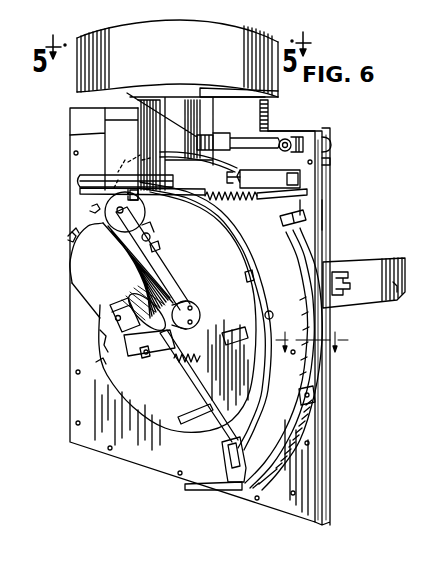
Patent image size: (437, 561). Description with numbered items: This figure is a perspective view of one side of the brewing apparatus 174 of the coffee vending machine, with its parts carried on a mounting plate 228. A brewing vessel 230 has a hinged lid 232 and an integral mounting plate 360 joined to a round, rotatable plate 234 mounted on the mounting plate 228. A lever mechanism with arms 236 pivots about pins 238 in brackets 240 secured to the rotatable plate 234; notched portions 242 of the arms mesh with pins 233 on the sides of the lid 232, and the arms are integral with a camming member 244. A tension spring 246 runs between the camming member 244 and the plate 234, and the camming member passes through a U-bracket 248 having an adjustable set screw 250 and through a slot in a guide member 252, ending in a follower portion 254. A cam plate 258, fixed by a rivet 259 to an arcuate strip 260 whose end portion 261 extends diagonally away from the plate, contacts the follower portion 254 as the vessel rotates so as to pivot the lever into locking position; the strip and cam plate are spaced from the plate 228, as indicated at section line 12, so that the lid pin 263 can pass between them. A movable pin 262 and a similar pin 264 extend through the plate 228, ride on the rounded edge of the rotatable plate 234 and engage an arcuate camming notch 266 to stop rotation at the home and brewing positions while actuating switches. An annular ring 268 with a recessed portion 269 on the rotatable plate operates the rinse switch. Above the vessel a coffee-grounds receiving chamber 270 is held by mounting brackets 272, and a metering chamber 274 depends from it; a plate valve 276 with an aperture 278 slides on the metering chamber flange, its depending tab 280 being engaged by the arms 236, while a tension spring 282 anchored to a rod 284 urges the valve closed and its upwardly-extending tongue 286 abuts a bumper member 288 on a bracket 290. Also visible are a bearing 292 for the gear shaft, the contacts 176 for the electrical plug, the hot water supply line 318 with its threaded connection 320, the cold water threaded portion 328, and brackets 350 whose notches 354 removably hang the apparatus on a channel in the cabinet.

The section line 12- 12 is at (312, 349).
The brewing apparatus 174 is at (148, 449).
The contacts 176 is at (340, 297).
The mounting plate 228 is at (308, 487).
The brewing vessel 230 is at (110, 270).
The hinged lid 232 is at (108, 209).
The pins 233 is at (92, 210).
The rotatable plate 234 is at (231, 271).
The arms 236 is at (69, 240).
The pins 238 is at (151, 236).
The brackets 240 is at (160, 247).
The notched portions 242 is at (73, 232).
The camming member 244 is at (178, 386).
The tension spring 246 is at (187, 363).
The U-bracket 248 is at (146, 356).
The adjustable set screw 250 is at (142, 352).
The guide member 252 is at (183, 416).
The follower portion 254 is at (236, 460).
The cam plate 258 is at (284, 406).
The rivet 259 is at (315, 392).
The arcuate strip 260 is at (293, 417).
The end portion 261 is at (211, 490).
The movable pin 262 is at (270, 311).
The pin 263 is at (135, 145).
The pin 264 is at (103, 366).
The arcuate camming notch 266 is at (102, 340).
The annular ring 268 is at (250, 239).
The recessed portion 269 is at (252, 276).
The coffee-grounds receiving chamber 270 is at (193, 65).
The mounting brackets 272 is at (202, 113).
The metering chamber 274 is at (107, 133).
The plate valve 276 is at (80, 181).
The aperture 278 is at (225, 193).
The depending tab 280 is at (85, 192).
The tension spring 282 is at (258, 200).
The rod 284 is at (308, 192).
The upwardly-extending tongue 286 is at (226, 175).
The bumper member 288 is at (237, 172).
The bracket 290 is at (283, 170).
The bearing 292 is at (187, 137).
The hot water supply line 318 is at (325, 216).
The threaded connection 320 is at (292, 139).
The threaded portion 328 is at (198, 162).
The brackets 350 is at (386, 272).
The notches 354 is at (397, 288).
The integral mounting plate 360 is at (198, 312).